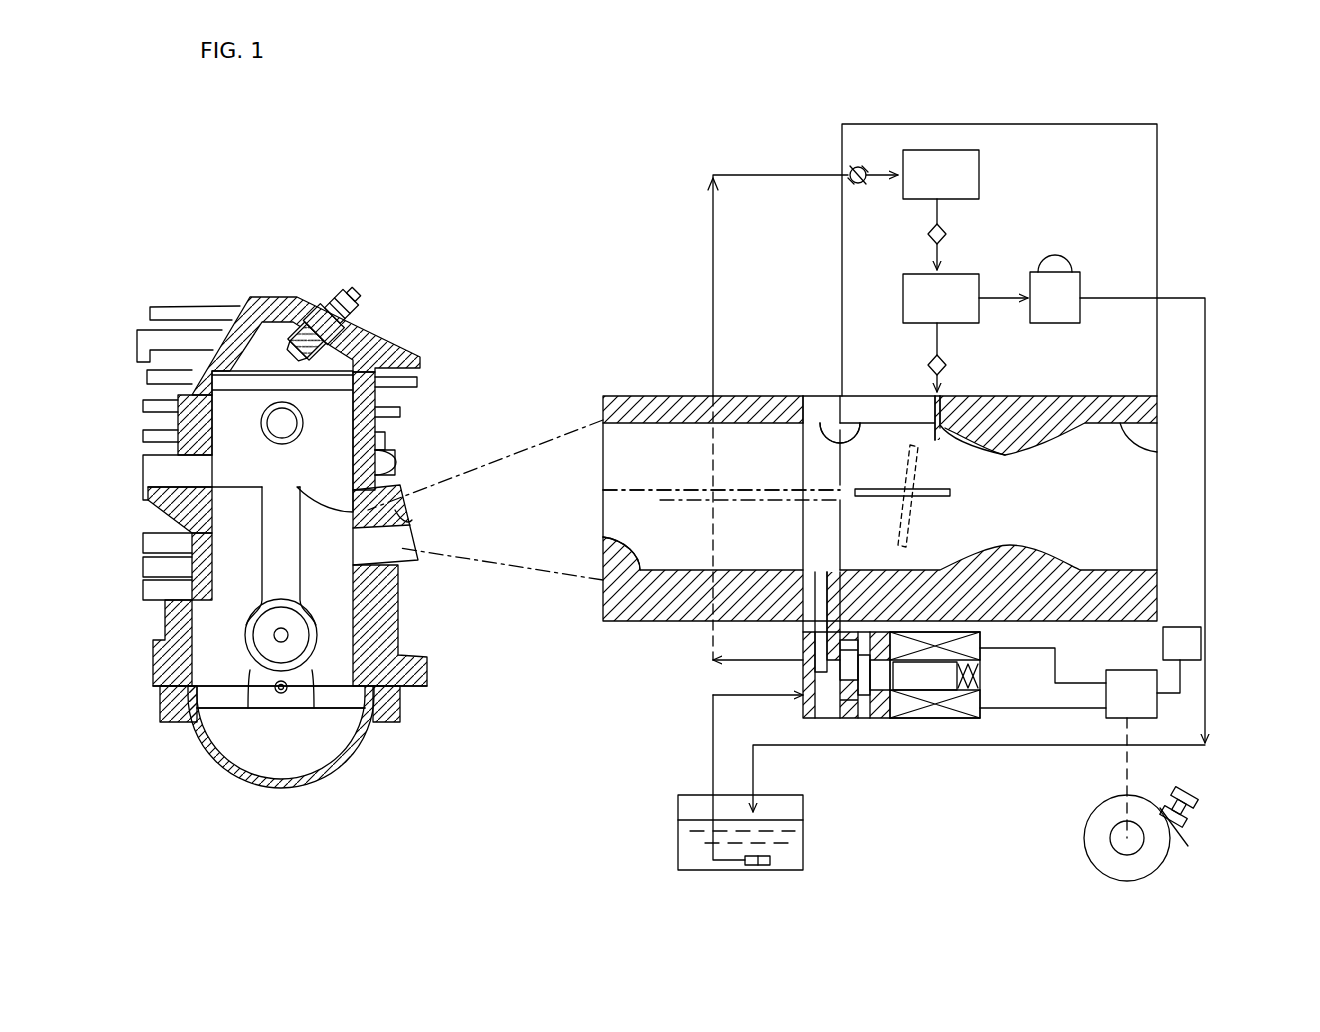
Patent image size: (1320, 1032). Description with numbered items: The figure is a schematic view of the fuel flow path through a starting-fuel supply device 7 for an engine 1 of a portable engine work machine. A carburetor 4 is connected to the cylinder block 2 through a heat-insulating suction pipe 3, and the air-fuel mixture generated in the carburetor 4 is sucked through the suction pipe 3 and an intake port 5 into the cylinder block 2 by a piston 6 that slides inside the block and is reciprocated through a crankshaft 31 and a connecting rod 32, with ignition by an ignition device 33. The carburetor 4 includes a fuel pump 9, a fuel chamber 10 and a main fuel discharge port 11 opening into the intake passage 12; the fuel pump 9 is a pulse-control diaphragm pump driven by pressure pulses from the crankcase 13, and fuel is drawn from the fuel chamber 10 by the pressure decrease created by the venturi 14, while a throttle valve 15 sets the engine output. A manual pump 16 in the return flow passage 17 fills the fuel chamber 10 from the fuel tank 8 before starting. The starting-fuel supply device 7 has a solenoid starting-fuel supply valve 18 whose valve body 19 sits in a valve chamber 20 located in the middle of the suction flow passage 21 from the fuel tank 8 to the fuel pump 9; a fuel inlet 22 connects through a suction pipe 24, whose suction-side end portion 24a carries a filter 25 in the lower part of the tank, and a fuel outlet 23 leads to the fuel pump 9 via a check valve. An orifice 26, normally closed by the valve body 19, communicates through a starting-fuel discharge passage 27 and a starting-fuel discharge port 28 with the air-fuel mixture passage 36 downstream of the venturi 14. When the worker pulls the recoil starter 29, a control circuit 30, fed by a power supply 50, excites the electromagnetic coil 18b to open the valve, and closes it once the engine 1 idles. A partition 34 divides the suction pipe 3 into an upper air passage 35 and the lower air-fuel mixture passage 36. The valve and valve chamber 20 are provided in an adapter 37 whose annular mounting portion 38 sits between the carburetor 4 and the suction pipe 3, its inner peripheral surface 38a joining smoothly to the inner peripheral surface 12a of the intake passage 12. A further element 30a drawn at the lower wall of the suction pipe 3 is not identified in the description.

The engine 1 is at (388, 322).
The cylinder block 2 is at (390, 452).
The suction pipe 3 is at (672, 392).
The carburetor 4 is at (1162, 222).
The intake port 5 is at (412, 523).
The piston 6 is at (244, 458).
The starting-fuel supply device 7 is at (795, 680).
The fuel tank 8 is at (675, 838).
The fuel pump 9 is at (941, 174).
The fuel chamber 10 is at (941, 295).
The main fuel discharge port 11 is at (937, 432).
The intake passage 12 is at (807, 491).
The inner peripheral surface 12a is at (1157, 455).
The crankcase 13 is at (336, 700).
The venturi 14 is at (1005, 458).
The throttle valve 15 is at (908, 497).
The manual pump 16 is at (1074, 268).
The return flow passage 17 is at (1095, 300).
The starting-fuel supply valve 18 is at (905, 722).
The electromagnetic coil 18b is at (940, 712).
The valve body 19 is at (852, 705).
The valve chamber 20 is at (865, 712).
The suction flow passage 21 is at (716, 272).
The fuel inlet 22 is at (812, 694).
The fuel outlet 23 is at (812, 664).
The suction pipe 24 is at (712, 740).
The suction-side end portion 24a is at (750, 866).
The filter 25 is at (770, 868).
The orifice 26 is at (850, 605).
The starting-fuel discharge passage 27 is at (815, 620).
The starting-fuel discharge port 28 is at (822, 578).
The recoil starter 29 is at (1180, 845).
The control circuit 30 is at (1131, 754).
The air bleed passage 30a is at (605, 565).
The crankshaft 31 is at (300, 678).
The connecting rod 32 is at (288, 555).
The ignition device 33 is at (317, 296).
The partition 34 is at (692, 488).
The air passage 35 is at (861, 457).
The air-fuel mixture passage 36 is at (861, 535).
The adapter 37 is at (822, 392).
The annular mounting portion 38 is at (798, 400).
The inner peripheral surface 38a is at (858, 400).
The power supply 50 is at (1179, 660).